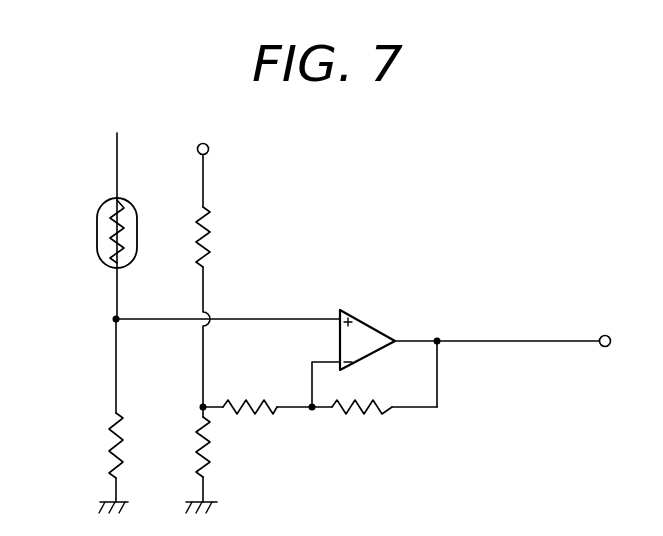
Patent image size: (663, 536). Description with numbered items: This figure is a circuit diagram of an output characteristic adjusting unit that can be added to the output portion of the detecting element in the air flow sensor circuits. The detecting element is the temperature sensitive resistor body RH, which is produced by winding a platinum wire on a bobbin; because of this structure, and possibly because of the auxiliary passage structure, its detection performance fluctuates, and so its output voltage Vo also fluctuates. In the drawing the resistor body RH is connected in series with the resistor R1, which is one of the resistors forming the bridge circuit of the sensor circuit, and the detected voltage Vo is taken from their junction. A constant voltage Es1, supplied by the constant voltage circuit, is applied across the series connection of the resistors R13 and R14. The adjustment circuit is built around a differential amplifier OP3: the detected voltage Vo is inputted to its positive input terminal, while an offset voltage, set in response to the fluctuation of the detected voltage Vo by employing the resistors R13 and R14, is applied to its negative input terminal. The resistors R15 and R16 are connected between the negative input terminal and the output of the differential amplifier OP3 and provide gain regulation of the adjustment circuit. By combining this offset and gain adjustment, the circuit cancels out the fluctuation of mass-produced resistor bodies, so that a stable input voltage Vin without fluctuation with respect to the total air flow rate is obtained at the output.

The temperature sensitive resistor body RH is at (97, 229).
The constant voltage Es1 is at (200, 159).
The resistor R13 is at (226, 237).
The output voltage Vo is at (210, 319).
The resistor R1 is at (128, 416).
The resistor R14 is at (224, 459).
The resistor R15 is at (259, 390).
The resistor R16 is at (374, 398).
The differential amplifier OP3 is at (372, 323).
The input voltage Vin is at (506, 325).